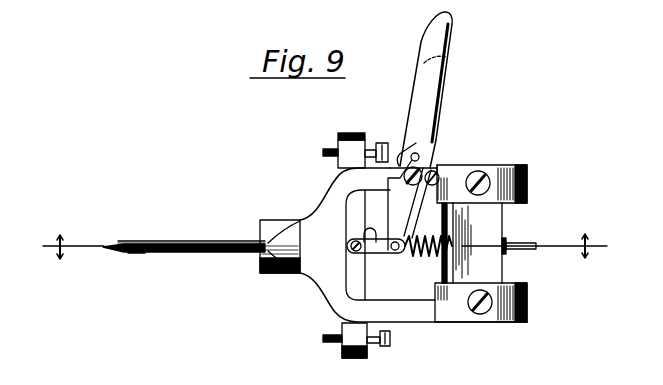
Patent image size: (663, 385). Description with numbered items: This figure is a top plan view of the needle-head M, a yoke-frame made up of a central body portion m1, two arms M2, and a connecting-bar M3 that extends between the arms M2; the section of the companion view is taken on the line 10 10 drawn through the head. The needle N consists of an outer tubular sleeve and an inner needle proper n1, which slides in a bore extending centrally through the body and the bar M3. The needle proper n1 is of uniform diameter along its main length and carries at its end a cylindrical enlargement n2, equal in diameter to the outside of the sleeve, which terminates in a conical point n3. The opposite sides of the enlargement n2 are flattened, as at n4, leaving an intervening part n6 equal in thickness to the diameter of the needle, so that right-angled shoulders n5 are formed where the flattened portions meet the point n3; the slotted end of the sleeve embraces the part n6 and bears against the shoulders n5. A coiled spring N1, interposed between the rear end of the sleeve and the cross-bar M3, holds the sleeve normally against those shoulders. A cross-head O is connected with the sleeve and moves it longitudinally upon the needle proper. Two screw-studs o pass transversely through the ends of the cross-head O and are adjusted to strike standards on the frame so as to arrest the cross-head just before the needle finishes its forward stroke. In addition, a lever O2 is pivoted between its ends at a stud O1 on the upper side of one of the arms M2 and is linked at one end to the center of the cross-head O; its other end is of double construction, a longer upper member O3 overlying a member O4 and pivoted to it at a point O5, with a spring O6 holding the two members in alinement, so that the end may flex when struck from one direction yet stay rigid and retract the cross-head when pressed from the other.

The section line 10 10 is at (328, 246).
The needle N is at (188, 243).
The needle proper n1 is at (342, 217).
The cylindrical enlargement n2 is at (135, 256).
The conical point n3 is at (116, 253).
The flattened portions n4 is at (134, 250).
The right-angled shoulders n5 is at (122, 242).
The intervening part n6 is at (145, 246).
The central body portion m1 is at (268, 221).
The cross-head O is at (352, 277).
The screw-studs o is at (332, 155).
The needle-head M is at (527, 300).
The arms M2 is at (389, 160).
The connecting-bar M3 is at (502, 221).
The coiled spring N1 is at (424, 254).
The cam O1 is at (437, 164).
The lever O2 is at (426, 110).
The rigid hooked arm O3 is at (444, 42).
The spring O4 is at (410, 221).
The pivot O5 is at (428, 152).
The roller O6 is at (437, 126).